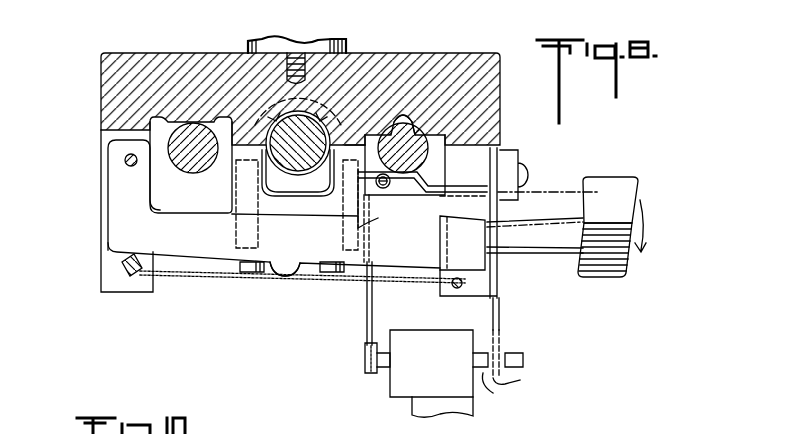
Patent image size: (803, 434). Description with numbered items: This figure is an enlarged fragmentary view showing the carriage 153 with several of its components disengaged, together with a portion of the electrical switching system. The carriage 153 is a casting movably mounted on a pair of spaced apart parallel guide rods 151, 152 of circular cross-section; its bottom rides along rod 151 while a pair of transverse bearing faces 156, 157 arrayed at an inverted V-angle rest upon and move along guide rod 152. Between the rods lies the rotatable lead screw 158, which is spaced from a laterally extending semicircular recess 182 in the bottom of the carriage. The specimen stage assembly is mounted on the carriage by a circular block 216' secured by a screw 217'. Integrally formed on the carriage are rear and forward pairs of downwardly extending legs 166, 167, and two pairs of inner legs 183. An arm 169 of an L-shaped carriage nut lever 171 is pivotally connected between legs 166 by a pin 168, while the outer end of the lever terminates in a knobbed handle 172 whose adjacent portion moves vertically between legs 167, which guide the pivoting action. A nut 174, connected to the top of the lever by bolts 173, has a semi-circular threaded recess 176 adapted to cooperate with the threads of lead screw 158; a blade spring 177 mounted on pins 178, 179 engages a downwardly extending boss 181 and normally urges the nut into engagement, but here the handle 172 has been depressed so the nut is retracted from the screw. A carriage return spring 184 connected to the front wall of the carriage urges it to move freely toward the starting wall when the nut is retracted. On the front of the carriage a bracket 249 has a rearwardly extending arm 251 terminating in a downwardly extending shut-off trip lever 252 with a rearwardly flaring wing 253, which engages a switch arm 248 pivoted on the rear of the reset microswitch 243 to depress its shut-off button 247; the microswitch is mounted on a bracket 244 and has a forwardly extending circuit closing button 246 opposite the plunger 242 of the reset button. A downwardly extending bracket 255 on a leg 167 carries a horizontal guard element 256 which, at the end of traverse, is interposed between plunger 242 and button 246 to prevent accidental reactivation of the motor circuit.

The carriage 153 is at (103, 70).
The semicircular recess 182 is at (277, 117).
The threaded recess 176 is at (289, 186).
The circular block 216' is at (302, 32).
The screw 217' is at (285, 47).
The support guide rod 151 is at (187, 162).
The support guide rod 152 is at (430, 158).
The bearing face 156 is at (392, 118).
The bearing face 157 is at (416, 123).
The lead screw 158 is at (352, 90).
The arm 169 is at (113, 182).
The pin 168 is at (125, 161).
The legs 166 is at (112, 254).
The carriage nut lever 171 is at (303, 244).
The nut 174 is at (243, 191).
The inner legs 183 is at (244, 236).
The arm 251 is at (436, 188).
The carriage return spring 184 is at (383, 189).
The bracket 249 is at (503, 147).
The knobbed handle 172 is at (540, 230).
The legs 167 is at (486, 281).
The pin 179 is at (450, 287).
The bracket 255 is at (492, 306).
The blade spring 177 is at (190, 280).
The pin 178 is at (130, 278).
The bolts 173 is at (254, 275).
The boss 181 is at (286, 280).
The shut-off trip lever 252 is at (366, 331).
The wing 253 is at (364, 356).
The switch arm 248 is at (367, 372).
The shut-off button 247 is at (382, 376).
The reset microswitch 243 is at (445, 368).
The bracket 244 is at (414, 402).
The plunger 242 is at (525, 362).
The guard element 256 is at (523, 378).
The circuit closing button 246 is at (495, 378).